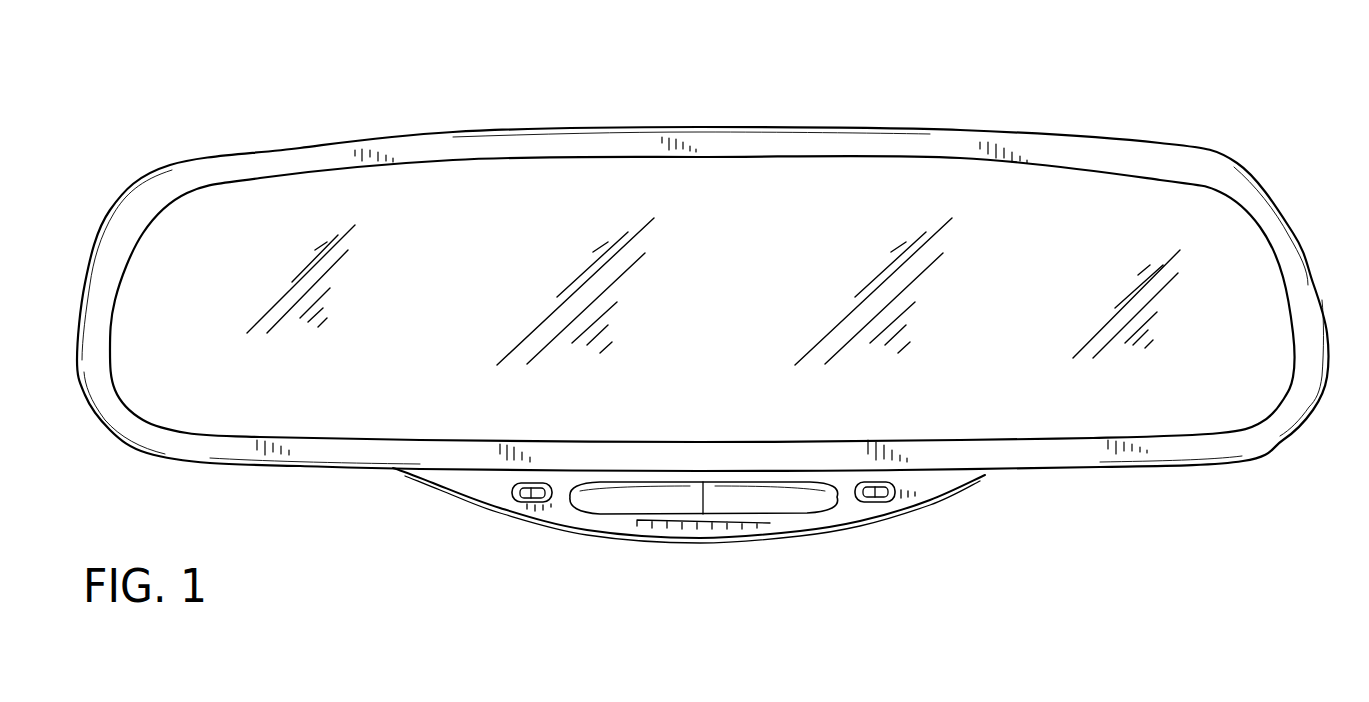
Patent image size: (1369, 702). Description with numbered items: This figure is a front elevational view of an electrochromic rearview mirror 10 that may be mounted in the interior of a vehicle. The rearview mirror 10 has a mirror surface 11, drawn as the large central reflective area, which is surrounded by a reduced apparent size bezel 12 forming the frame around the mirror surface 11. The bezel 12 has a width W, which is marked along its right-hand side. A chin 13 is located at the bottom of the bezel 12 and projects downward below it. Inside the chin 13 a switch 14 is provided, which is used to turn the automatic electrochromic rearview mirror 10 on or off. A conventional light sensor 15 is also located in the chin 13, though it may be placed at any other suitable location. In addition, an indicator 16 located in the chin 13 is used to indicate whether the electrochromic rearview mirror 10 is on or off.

The electrochromic rearview mirror 10 is at (528, 99).
The mirror surface 11 is at (725, 183).
The bezel 12 is at (818, 142).
The chin 13 is at (588, 533).
The switch 14 is at (753, 512).
The light sensor 15 is at (513, 497).
The indicator 16 is at (883, 497).
The width W is at (1368, 348).